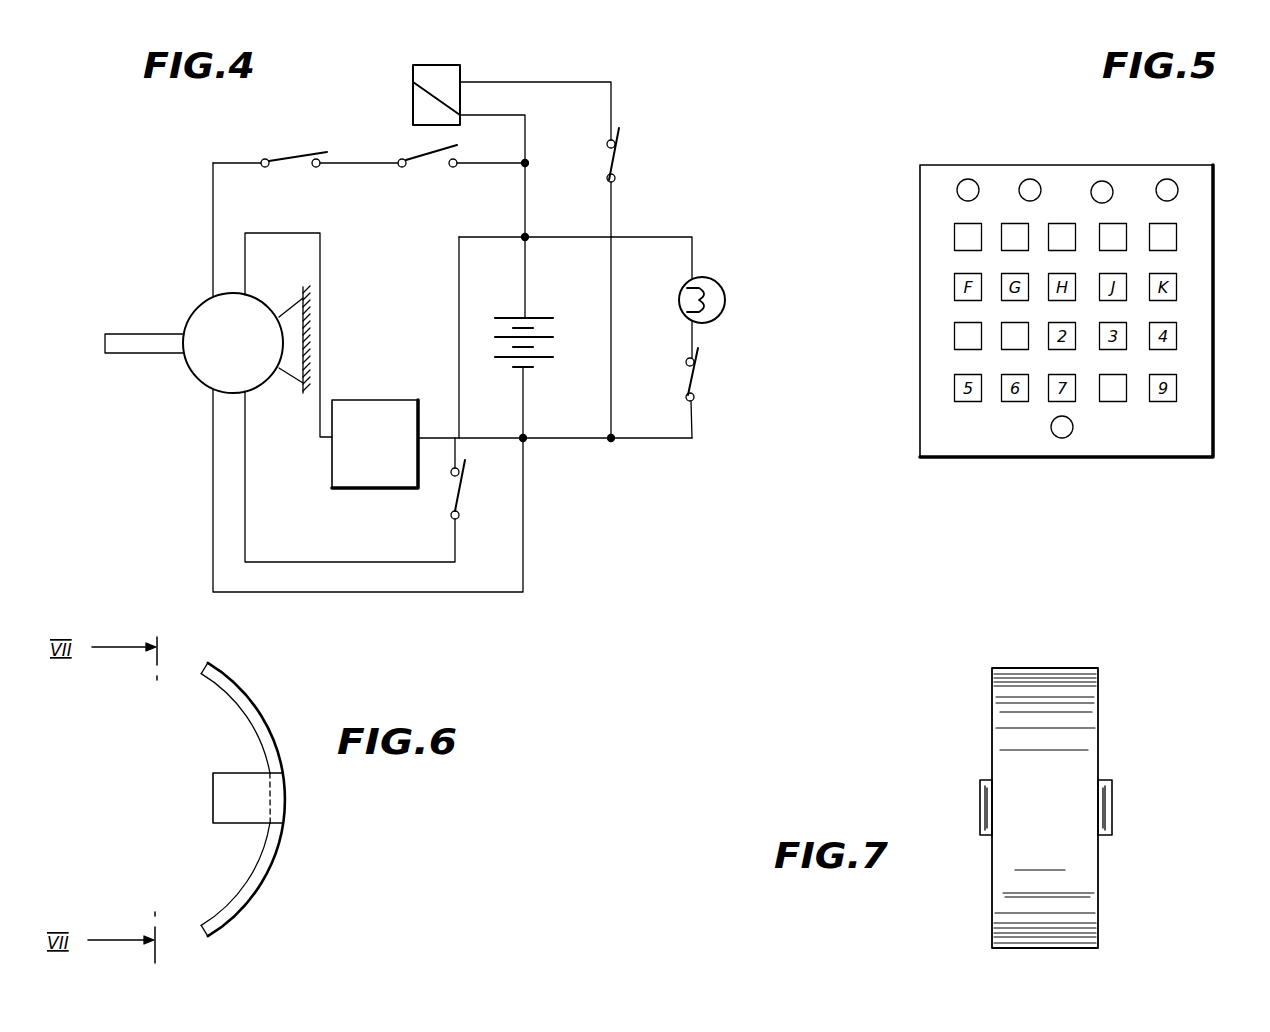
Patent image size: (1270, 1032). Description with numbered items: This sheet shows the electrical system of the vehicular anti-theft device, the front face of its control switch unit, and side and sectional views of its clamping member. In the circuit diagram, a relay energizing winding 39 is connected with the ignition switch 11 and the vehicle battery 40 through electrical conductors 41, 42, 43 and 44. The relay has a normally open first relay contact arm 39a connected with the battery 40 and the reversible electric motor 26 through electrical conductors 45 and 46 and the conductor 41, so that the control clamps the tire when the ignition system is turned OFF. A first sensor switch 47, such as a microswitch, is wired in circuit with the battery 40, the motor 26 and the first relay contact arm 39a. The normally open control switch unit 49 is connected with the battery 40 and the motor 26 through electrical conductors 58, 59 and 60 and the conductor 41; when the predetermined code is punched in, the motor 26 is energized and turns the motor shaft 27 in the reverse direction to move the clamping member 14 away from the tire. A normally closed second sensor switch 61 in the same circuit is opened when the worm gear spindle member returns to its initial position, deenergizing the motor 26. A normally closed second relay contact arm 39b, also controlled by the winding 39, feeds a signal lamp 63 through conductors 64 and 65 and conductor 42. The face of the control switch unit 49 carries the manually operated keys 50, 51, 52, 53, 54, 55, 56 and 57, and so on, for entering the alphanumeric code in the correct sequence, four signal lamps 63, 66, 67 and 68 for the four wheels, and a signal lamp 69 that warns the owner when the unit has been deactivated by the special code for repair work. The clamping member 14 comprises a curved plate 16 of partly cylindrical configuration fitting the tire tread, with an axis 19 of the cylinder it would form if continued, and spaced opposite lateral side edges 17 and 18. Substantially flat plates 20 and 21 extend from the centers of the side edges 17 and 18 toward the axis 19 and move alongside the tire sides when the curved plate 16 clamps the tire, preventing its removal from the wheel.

In FIG. 4, the ignition switch 11 is at (617, 164).
In FIG. 6, the clamping member 14 is at (224, 929).
In FIG. 7, the clamping member 14 is at (1099, 931).
In FIG. 6, the curved plate 16 is at (230, 678).
In FIG. 7, the curved plate 16 is at (1096, 702).
In FIG. 7, the lateral side edge 17 is at (982, 890).
In FIG. 6, the lateral side edge 18 is at (267, 729).
In FIG. 7, the lateral side edge 18 is at (1110, 878).
In FIG. 6, the axis 19 is at (122, 795).
In FIG. 7, the flat plate 20 is at (983, 780).
In FIG. 6, the flat plate 21 is at (235, 816).
In FIG. 7, the flat plate 21 is at (1112, 782).
In FIG. 4, the motor 26 is at (203, 373).
In FIG. 4, the motor shaft 27 is at (157, 336).
In FIG. 4, the relay energizing winding 39 is at (413, 103).
In FIG. 4, the first relay contact arm 39a is at (418, 156).
In FIG. 4, the second relay contact arm 39b is at (697, 378).
In FIG. 4, the battery 40 is at (547, 332).
In FIG. 4, the electrical conductor 41 is at (523, 277).
In FIG. 4, the electrical conductor 42 is at (580, 437).
In FIG. 4, the electrical conductor 43 is at (612, 322).
In FIG. 4, the electrical conductor 44 is at (598, 86).
In FIG. 4, the electrical conductor 45 is at (363, 166).
In FIG. 4, the electrical conductor 46 is at (212, 497).
In FIG. 4, the first sensor switch 47 is at (305, 156).
In FIG. 4, the control switch unit 49 is at (423, 535).
In FIG. 5, the control switch unit 49 is at (1223, 143).
In FIG. 5, the key 50 is at (955, 226).
In FIG. 5, the key 51 is at (1003, 247).
In FIG. 5, the key 52 is at (1074, 227).
In FIG. 5, the key 53 is at (1125, 250).
In FIG. 5, the key 54 is at (1177, 238).
In FIG. 5, the key 55 is at (955, 330).
In FIG. 5, the key 56 is at (1006, 345).
In FIG. 5, the key 57 is at (1125, 377).
In FIG. 4, the electrical conductor 58 is at (320, 334).
In FIG. 4, the electrical conductor 59 is at (459, 355).
In FIG. 4, the electrical conductor 60 is at (432, 437).
In FIG. 4, the second sensor switch 61 is at (463, 497).
In FIG. 4, the signal lamp 63 is at (723, 296).
In FIG. 5, the signal lamp 63 is at (958, 195).
In FIG. 4, the electrical conductor 64 is at (657, 242).
In FIG. 4, the electrical conductor 65 is at (693, 337).
In FIG. 5, the signal lamp 66 is at (1028, 185).
In FIG. 5, the signal lamp 67 is at (1092, 194).
In FIG. 5, the signal lamp 68 is at (1178, 192).
In FIG. 5, the signal lamp 69 is at (1071, 434).